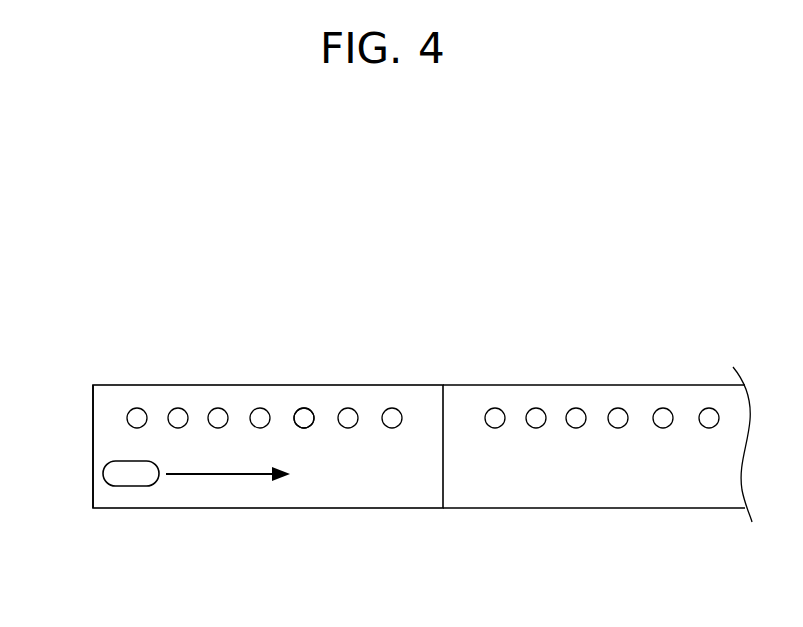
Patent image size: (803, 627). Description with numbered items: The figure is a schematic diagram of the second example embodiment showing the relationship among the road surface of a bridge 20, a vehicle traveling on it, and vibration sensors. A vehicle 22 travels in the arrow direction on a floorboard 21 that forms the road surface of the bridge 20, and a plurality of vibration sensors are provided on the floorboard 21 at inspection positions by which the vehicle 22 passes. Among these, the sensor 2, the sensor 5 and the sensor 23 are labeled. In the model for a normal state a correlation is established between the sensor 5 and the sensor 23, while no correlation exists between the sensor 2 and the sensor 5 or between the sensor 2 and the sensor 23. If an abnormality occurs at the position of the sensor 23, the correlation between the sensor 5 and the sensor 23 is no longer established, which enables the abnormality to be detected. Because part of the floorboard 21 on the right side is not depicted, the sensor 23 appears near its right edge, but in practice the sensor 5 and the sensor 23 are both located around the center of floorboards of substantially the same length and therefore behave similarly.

The bridge 20 is at (127, 373).
The floorboard 21 is at (92, 402).
The sensor 2 is at (178, 408).
The sensor 5 is at (304, 408).
The vehicle 22 is at (107, 473).
The sensor 23 is at (705, 408).